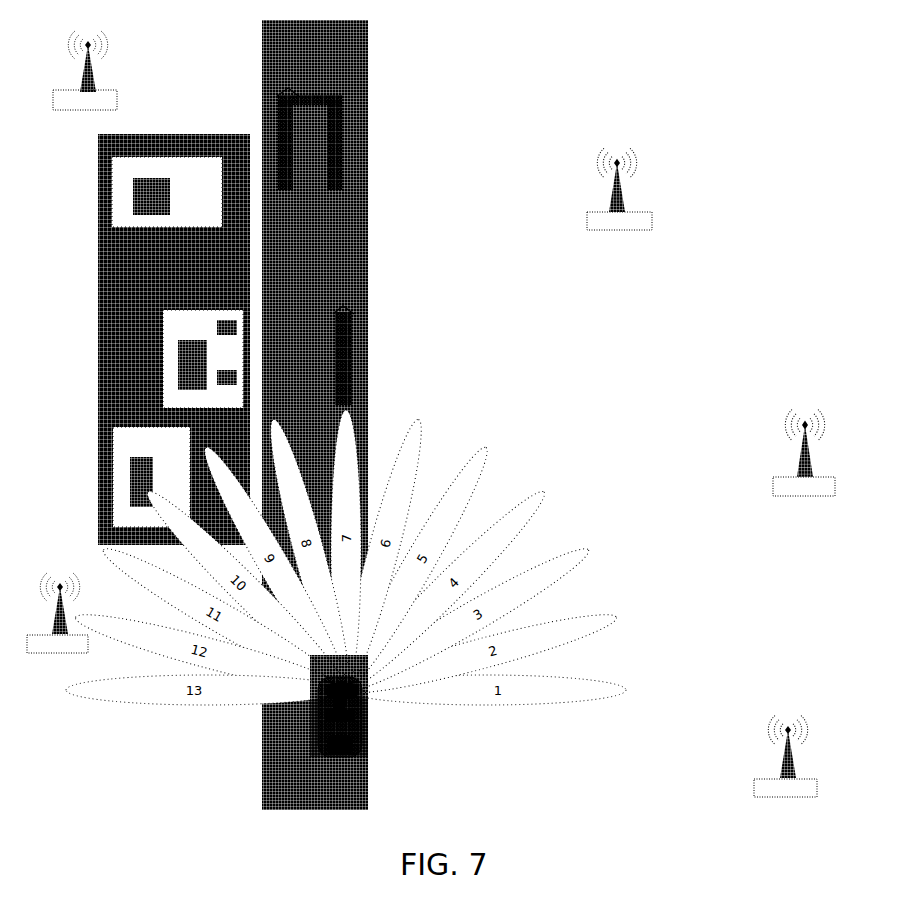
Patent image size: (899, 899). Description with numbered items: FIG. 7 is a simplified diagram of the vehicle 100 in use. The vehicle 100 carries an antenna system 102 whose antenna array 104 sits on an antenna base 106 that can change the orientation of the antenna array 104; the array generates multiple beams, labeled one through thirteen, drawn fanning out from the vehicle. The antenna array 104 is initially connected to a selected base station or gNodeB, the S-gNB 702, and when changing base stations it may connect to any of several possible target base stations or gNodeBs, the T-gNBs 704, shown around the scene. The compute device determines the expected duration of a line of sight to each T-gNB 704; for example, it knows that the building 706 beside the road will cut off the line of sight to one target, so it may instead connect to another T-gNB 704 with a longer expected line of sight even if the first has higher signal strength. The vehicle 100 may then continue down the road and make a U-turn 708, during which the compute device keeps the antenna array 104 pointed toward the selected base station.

The vehicle 100 is at (358, 752).
The antenna system 102 is at (312, 710).
The antenna array 104 is at (346, 704).
The antenna base 106 is at (355, 716).
The selected base station or gNodeB (S-gNB) 702 is at (770, 798).
The target base station or gNodeB (T-gNB) 704 is at (55, 112).
The building 706 is at (114, 492).
The U-turn 708 is at (337, 87).